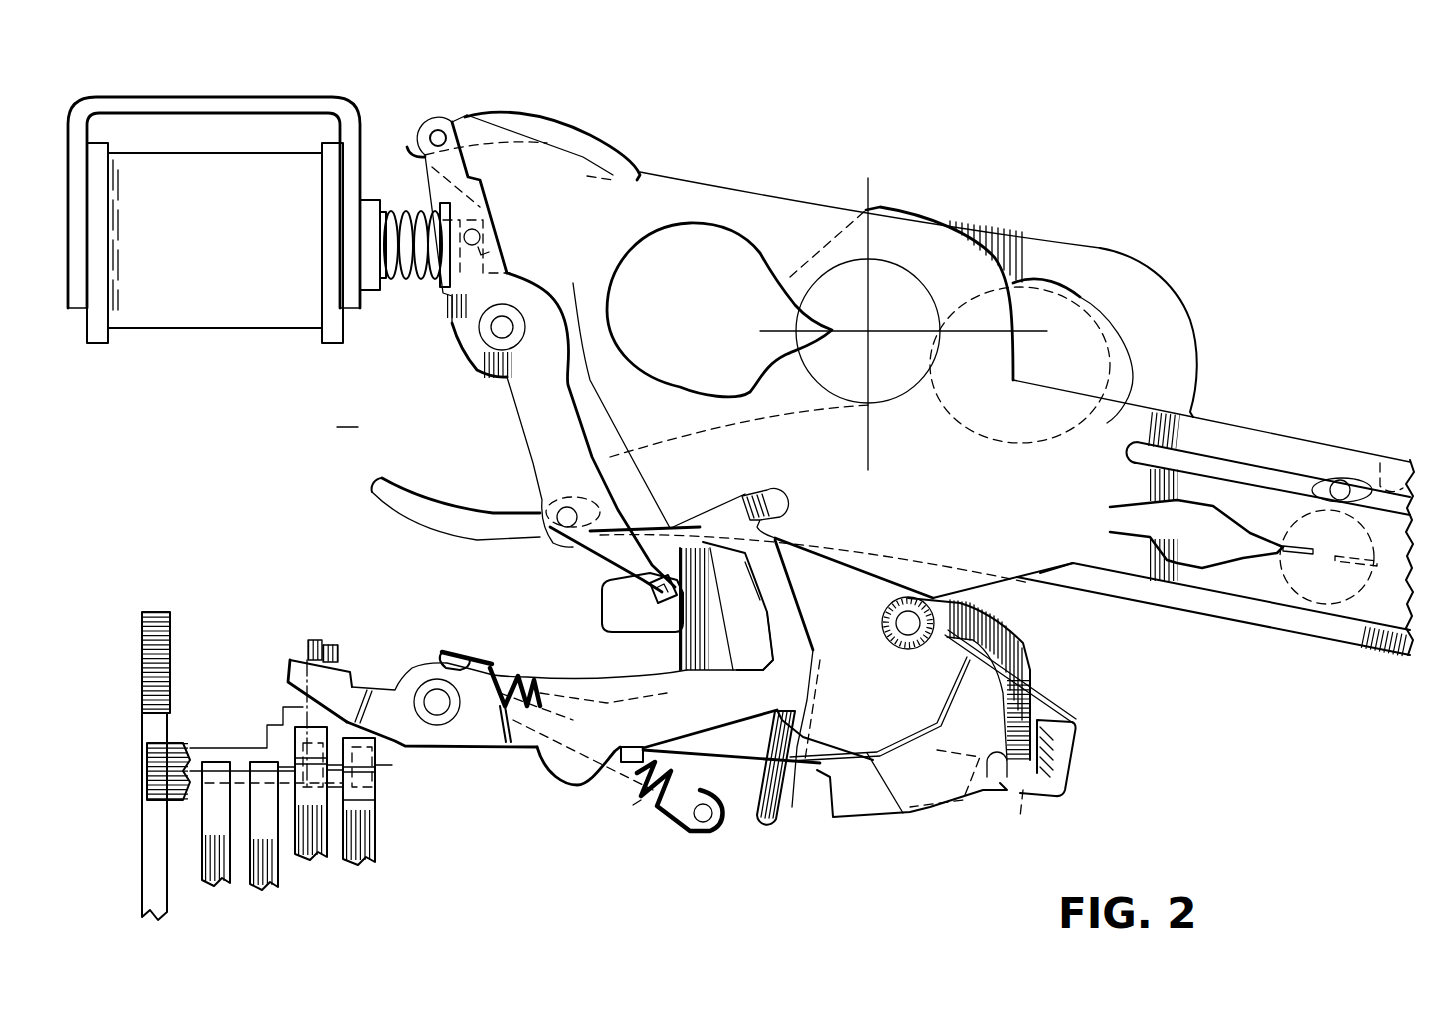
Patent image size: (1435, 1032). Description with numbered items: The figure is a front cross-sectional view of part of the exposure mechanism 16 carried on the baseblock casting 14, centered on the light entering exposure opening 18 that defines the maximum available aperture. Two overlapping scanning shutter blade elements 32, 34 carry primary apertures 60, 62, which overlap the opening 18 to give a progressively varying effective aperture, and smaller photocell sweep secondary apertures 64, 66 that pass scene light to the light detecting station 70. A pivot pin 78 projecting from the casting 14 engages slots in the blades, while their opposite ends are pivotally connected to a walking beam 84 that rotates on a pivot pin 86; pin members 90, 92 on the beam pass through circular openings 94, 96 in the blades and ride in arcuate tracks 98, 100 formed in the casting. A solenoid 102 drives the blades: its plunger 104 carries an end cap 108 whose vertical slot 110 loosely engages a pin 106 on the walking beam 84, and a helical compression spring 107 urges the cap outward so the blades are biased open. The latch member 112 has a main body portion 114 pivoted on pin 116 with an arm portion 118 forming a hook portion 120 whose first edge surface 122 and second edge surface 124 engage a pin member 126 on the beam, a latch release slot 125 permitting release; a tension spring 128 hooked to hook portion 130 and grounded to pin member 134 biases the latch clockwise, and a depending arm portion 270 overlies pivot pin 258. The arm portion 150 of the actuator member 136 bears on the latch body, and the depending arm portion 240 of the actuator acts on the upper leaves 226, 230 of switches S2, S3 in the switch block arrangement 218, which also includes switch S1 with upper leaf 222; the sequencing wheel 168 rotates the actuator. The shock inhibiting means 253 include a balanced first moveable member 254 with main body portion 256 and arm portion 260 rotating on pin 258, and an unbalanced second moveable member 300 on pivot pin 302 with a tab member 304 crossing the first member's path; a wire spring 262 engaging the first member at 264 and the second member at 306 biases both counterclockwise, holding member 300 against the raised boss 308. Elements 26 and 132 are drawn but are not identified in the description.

The baseblock casting 14 is at (348, 417).
The exposure mechanism 16 is at (822, 190).
The light entering exposure opening 18 is at (860, 395).
The pivot axis 26 is at (860, 325).
The shutter blade element 32 is at (740, 182).
The shutter blade element 34 is at (1380, 462).
The scene light admitting primary aperture 60 is at (720, 238).
The scene light admitting primary aperture 62 is at (1078, 318).
The photocell sweep secondary aperture 64 is at (1178, 562).
The photocell sweep secondary aperture 66 is at (1385, 555).
The light detecting station 70 is at (1300, 610).
The pivot pin 78 is at (1340, 480).
The walking beam 84 is at (590, 380).
The pivot pin 86 is at (490, 345).
The pin member 90 is at (455, 125).
The pin member 92 is at (568, 505).
The circular opening 94 is at (440, 130).
The circular opening 96 is at (563, 507).
The arcuate track 98 is at (593, 138).
The arcuate track 100 is at (380, 482).
The solenoid 102 is at (256, 338).
The plunger unit 104 is at (418, 285).
The pin 106 is at (478, 232).
The helical compression spring 107 is at (386, 282).
The end cap 108 is at (515, 274).
The vertical slot 110 is at (490, 251).
The latch member 112 is at (550, 660).
The main body portion 114 is at (487, 750).
The pivot pin 116 is at (447, 725).
The arm portion 118 is at (805, 590).
The hook portion 120 is at (602, 618).
The first edge surface 122 is at (648, 585).
The second edge surface 124 is at (662, 612).
The latch release slot 125 is at (750, 592).
The pin member 126 is at (668, 525).
The tension spring 128 is at (641, 800).
The hook portion 130 is at (450, 650).
The spring 132 is at (715, 830).
The pin member 134 is at (340, 670).
The actuator member 136 is at (335, 632).
The arm portion 150 is at (310, 645).
The sequencing wheel 168 is at (160, 612).
The switch block arrangement 218 is at (383, 858).
The upper resilient terminal leaf 222 is at (247, 765).
The upper resilient leaf 226 is at (305, 870).
The upper resilient terminal leaf 230 is at (377, 835).
The depending arm portion 240 is at (343, 790).
The shock inhibiting means 253 is at (1043, 685).
The first moveable member 254 is at (818, 715).
The main body portion 256 is at (840, 725).
The pivot pin 258 is at (810, 660).
The arm portion 260 is at (715, 600).
The wire spring 262 is at (1075, 758).
The spring engaging edge 264 is at (737, 677).
The depending arm portion 270 is at (790, 800).
The second moveable member 300 is at (973, 692).
The pivot pin 302 is at (896, 624).
The tab member 304 is at (1023, 800).
The spring engaging edge 306 is at (960, 630).
The raised boss 308 is at (1025, 728).
The switch S1 is at (270, 885).
The switch S2 is at (318, 856).
The switch S3 is at (368, 865).